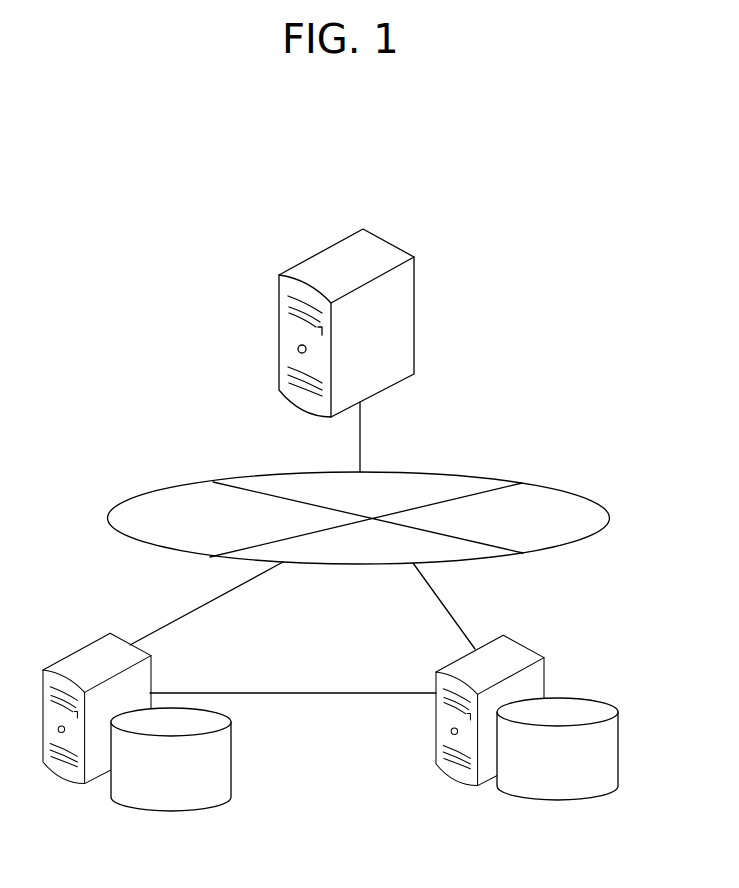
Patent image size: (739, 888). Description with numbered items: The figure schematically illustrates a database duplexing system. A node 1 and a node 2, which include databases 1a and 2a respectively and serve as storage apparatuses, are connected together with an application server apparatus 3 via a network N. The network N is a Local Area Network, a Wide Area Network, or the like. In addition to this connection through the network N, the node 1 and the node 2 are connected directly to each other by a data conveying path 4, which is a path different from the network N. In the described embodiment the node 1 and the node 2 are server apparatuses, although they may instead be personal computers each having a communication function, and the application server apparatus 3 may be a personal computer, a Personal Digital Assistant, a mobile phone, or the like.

The node 1 is at (75, 653).
The database 1a is at (133, 808).
The node 2 is at (535, 652).
The database 2a is at (593, 700).
The application server apparatus 3 is at (414, 277).
The data conveying path 4 is at (310, 692).
The network N is at (587, 497).